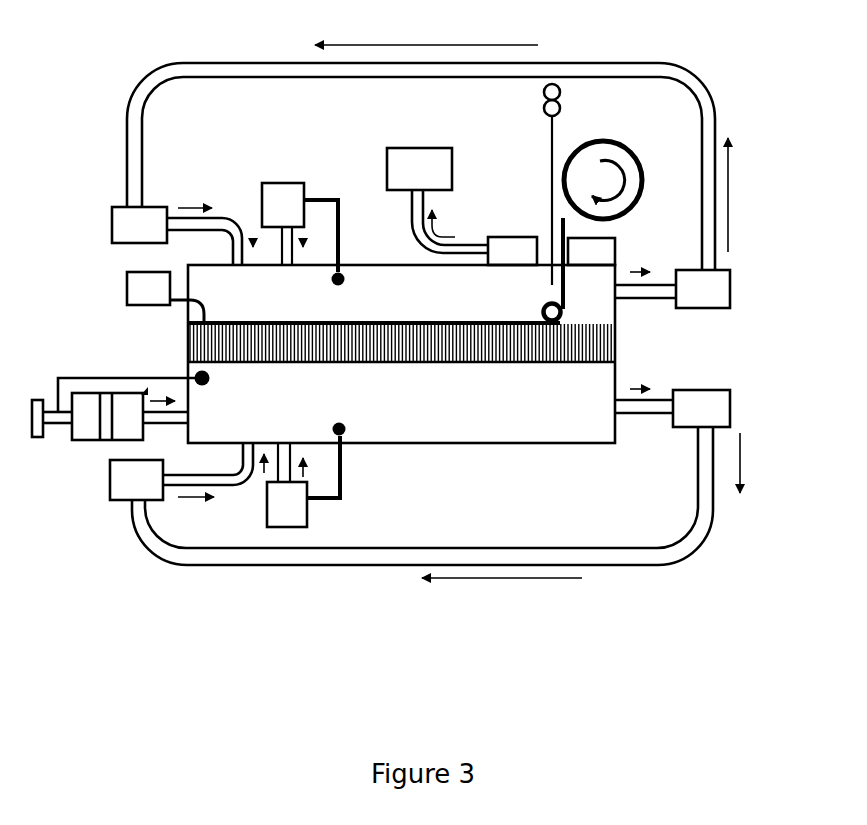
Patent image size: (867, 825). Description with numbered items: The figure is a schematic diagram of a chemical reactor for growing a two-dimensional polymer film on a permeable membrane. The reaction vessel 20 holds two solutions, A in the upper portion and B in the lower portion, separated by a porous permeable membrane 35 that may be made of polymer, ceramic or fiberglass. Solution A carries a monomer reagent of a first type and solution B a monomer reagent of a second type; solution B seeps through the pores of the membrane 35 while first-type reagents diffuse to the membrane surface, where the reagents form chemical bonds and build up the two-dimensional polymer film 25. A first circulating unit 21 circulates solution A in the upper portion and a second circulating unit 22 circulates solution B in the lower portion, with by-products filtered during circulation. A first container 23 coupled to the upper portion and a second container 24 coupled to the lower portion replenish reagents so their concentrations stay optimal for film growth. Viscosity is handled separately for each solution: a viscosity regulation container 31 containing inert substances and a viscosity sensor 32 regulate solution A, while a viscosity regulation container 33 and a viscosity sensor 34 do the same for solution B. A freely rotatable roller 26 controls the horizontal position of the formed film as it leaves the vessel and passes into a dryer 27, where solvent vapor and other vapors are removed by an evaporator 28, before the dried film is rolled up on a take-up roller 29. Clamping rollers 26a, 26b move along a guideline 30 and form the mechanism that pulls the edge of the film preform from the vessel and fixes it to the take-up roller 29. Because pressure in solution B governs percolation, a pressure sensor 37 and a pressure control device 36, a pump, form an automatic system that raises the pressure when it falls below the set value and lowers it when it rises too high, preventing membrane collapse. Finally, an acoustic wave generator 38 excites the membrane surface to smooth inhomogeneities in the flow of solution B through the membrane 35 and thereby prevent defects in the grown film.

The reaction vessel 20 is at (413, 445).
The first circulating unit 21 is at (112, 225).
The second circulating unit 22 is at (110, 500).
The first container 23 is at (735, 284).
The second container 24 is at (732, 412).
The two-dimensional polymer film 25 is at (478, 322).
The roller 26 is at (553, 325).
The clamping roller 26a is at (557, 86).
The clamping roller 26b is at (560, 106).
The dryer 27 is at (517, 237).
The evaporator 28 is at (385, 167).
The take-up roller 29 is at (608, 182).
The guideline 30 is at (548, 189).
The viscosity regulation container 31 is at (281, 183).
The viscosity sensor 32 is at (337, 197).
The viscosity regulation container 33 is at (290, 527).
The viscosity sensor 34 is at (328, 500).
The porous permeable membrane 35 is at (187, 348).
The pressure control device 36 is at (125, 430).
The pressure sensor 37 is at (155, 377).
The acoustic wave generator 38 is at (145, 290).